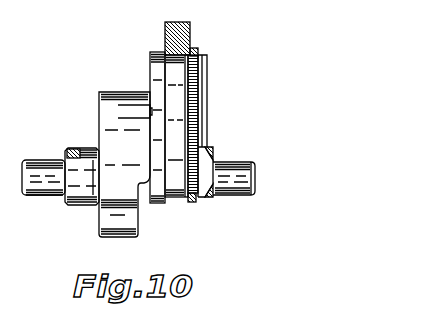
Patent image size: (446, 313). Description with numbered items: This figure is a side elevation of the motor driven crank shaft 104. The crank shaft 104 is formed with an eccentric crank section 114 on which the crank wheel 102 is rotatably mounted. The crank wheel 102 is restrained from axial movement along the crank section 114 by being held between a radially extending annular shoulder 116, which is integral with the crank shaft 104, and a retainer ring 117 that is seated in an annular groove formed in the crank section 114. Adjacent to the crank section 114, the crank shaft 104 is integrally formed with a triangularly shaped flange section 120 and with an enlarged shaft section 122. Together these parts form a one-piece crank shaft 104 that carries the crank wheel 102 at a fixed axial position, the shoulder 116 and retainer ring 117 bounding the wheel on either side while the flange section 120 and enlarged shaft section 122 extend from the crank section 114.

The crank wheel 102 is at (190, 26).
The crank shaft 104 is at (80, 223).
The eccentric crank section 114 is at (175, 198).
The annular shoulder 116 is at (157, 52).
The retainer ring 117 is at (196, 52).
The flange section 120 is at (112, 238).
The enlarged shaft section 122 is at (84, 135).